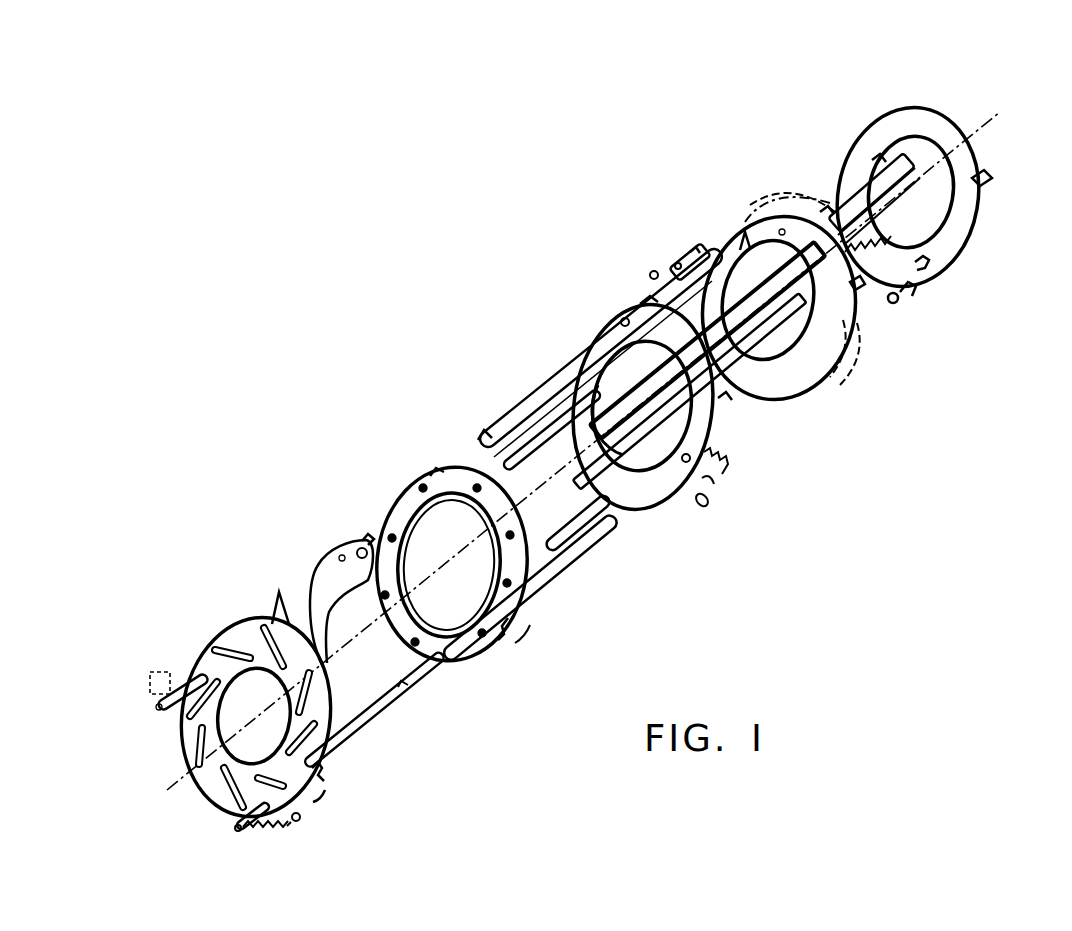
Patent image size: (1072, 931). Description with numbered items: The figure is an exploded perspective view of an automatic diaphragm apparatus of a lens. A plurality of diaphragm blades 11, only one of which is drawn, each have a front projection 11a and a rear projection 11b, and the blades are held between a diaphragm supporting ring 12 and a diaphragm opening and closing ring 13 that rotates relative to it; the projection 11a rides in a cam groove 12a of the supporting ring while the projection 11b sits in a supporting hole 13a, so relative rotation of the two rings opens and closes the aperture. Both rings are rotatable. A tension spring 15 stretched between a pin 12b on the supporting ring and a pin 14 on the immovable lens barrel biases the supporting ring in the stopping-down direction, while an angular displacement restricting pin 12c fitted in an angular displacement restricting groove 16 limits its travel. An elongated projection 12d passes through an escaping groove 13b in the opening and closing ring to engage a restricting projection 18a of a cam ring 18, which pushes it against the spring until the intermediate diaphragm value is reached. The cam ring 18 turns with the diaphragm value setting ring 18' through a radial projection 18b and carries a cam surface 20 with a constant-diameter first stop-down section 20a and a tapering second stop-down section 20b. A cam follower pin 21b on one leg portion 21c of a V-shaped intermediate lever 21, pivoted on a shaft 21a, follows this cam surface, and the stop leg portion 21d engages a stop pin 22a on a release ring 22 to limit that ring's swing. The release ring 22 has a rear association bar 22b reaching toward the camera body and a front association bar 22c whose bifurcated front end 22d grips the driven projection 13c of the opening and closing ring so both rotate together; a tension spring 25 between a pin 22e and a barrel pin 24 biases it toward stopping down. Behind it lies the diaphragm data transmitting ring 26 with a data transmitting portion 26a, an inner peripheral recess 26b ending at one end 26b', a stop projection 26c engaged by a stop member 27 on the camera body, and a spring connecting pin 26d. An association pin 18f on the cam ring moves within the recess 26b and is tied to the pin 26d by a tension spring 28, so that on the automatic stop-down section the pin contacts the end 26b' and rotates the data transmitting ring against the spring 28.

The diaphragm blade 11 is at (328, 577).
The front projection 11a is at (362, 560).
The rear projection 11b is at (366, 540).
The diaphragm supporting ring 12 is at (233, 637).
The cam groove 12a is at (278, 617).
The pin 12b is at (238, 831).
The angular displacement restricting pin 12c is at (182, 682).
The elongated projection 12d is at (583, 547).
The diaphragm opening and closing ring 13 is at (455, 657).
The supporting hole 13a is at (436, 478).
The escaping groove 13b is at (507, 614).
The driven projection 13c is at (525, 404).
The pin 14 is at (303, 820).
The tension spring 15 is at (275, 830).
The angular displacement restricting groove 16 is at (158, 680).
The cam ring 18 is at (779, 308).
The diaphragm value setting ring 18' is at (779, 149).
The restricting projection 18a is at (570, 537).
The radial projection 18b is at (857, 288).
The association pin 18f is at (823, 207).
The cam surface 20 is at (745, 233).
The first stop-down section 20a is at (722, 247).
The second stop-down section 20b is at (780, 190).
The intermediate lever 21 is at (662, 262).
The shaft 21a is at (676, 262).
The cam follower pin 21b is at (689, 250).
The leg portion 21c is at (650, 274).
The stop leg portion 21d is at (724, 404).
The release ring 22 is at (650, 495).
The stop pin 22a is at (648, 300).
The rear association bar 22b is at (583, 353).
The front association bar 22c is at (533, 438).
The bifurcated front end 22d is at (478, 435).
The pin 22e is at (722, 452).
The pin 24 is at (708, 504).
The tension spring 25 is at (712, 480).
The diaphragm data transmitting ring 26 is at (903, 128).
The data transmitting portion 26a is at (988, 176).
The inner peripheral recess 26b is at (931, 233).
The end of peripheral recess 26b' is at (966, 268).
The stop projection 26c is at (912, 288).
The spring connecting pin 26d is at (872, 162).
The stop member 27 is at (897, 302).
The tension spring 28 is at (930, 133).